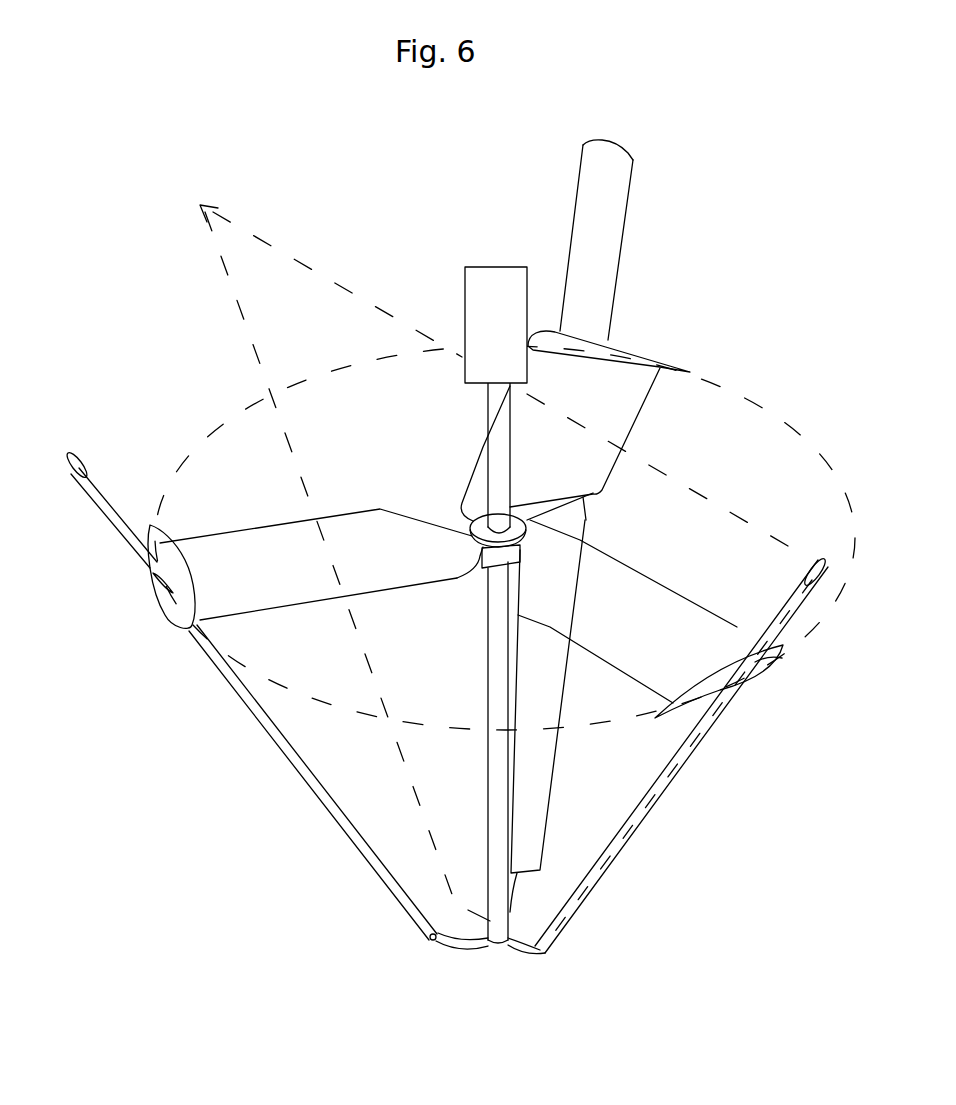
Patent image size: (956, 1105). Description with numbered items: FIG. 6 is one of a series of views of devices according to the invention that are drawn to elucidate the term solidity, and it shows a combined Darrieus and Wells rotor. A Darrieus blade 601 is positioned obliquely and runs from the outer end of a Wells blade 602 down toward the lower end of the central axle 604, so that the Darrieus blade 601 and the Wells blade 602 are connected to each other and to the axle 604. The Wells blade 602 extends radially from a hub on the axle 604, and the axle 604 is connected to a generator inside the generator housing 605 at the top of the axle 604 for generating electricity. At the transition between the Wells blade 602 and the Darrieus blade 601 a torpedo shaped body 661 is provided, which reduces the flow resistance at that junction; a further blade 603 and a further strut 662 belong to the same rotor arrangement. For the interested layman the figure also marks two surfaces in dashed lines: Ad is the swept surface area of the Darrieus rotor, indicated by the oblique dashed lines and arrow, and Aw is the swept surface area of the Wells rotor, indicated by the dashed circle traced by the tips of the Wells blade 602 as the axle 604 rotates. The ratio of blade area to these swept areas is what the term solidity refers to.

The Darrieus blade 601 is at (338, 807).
The Wells blade 602 is at (245, 600).
The rotor blade 603 is at (575, 526).
The axle 604 is at (500, 853).
The generator housing 605 is at (486, 301).
The torpedo shaped body 661 is at (708, 688).
The support strut 662 is at (668, 755).
The swept surface area of a Darrieus rotor Ad is at (235, 305).
The swept surface area of a Wells rotor Aw is at (182, 450).